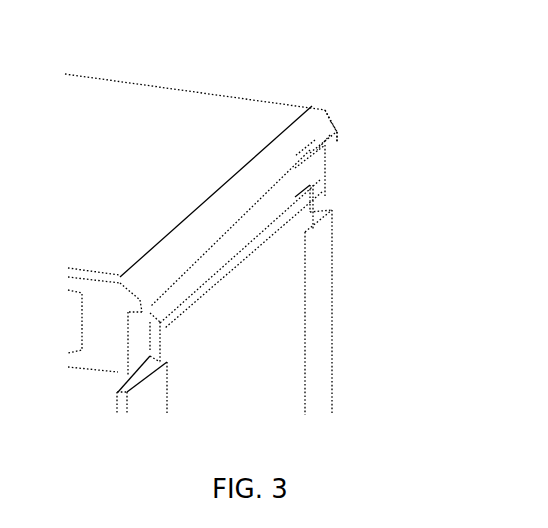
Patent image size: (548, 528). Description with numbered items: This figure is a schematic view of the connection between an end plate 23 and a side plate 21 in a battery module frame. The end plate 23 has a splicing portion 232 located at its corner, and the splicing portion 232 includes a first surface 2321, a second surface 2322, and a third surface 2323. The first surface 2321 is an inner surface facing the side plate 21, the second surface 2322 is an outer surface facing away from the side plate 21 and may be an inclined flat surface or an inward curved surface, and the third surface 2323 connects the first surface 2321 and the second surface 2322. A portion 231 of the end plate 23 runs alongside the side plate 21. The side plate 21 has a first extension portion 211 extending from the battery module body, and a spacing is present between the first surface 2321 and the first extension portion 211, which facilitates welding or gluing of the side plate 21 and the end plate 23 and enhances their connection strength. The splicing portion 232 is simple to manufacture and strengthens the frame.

The end plate 23 is at (173, 87).
The splicing portion 232 is at (325, 110).
The second surface 2322 is at (332, 115).
The third surface 2323 is at (336, 131).
The first surface 2321 is at (338, 145).
The side rail 231 is at (326, 170).
The first extension portion 211 is at (323, 210).
The side plate 21 is at (327, 277).